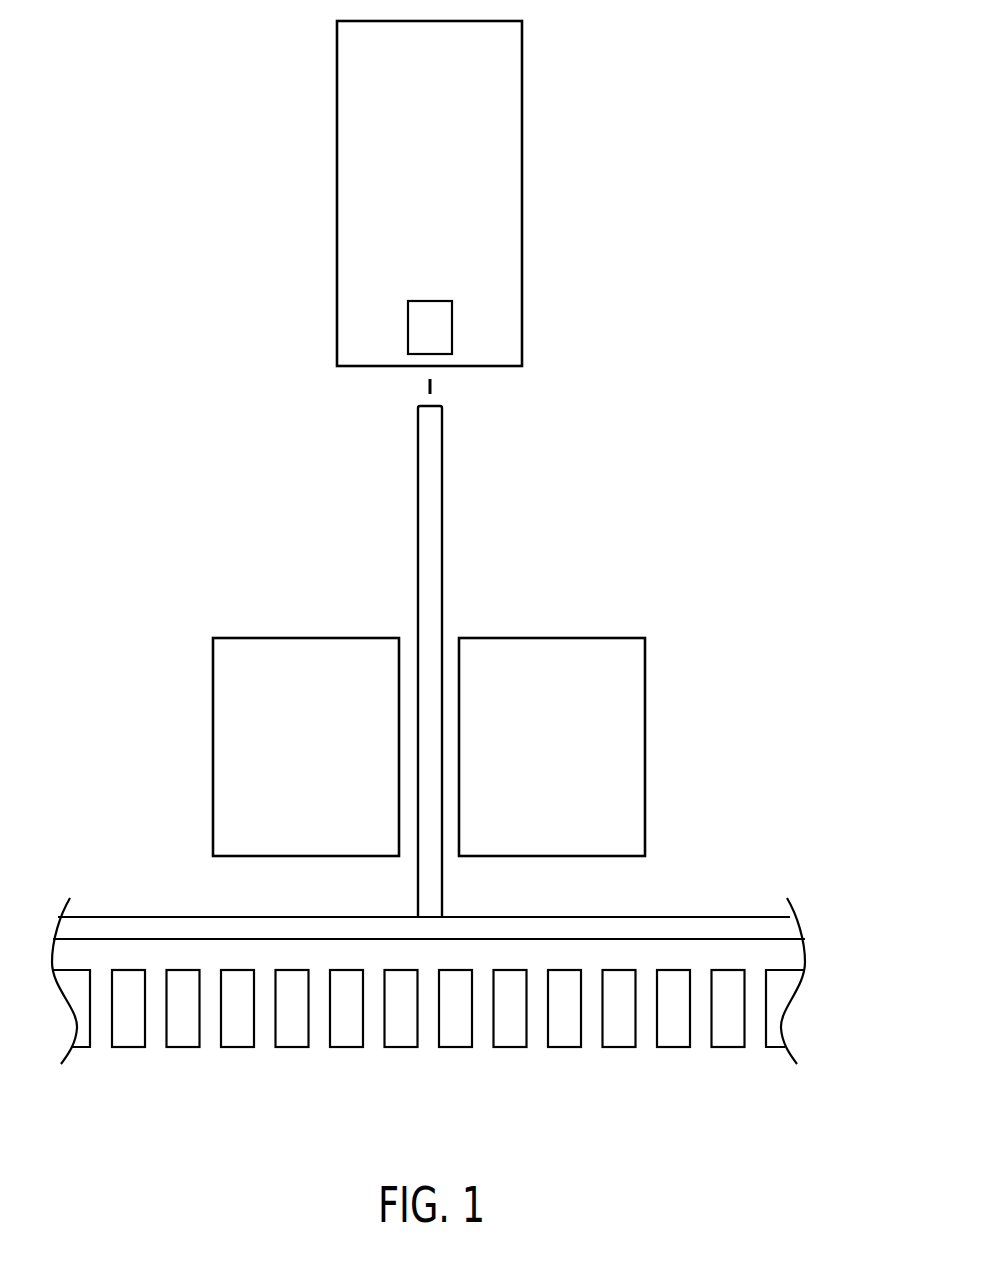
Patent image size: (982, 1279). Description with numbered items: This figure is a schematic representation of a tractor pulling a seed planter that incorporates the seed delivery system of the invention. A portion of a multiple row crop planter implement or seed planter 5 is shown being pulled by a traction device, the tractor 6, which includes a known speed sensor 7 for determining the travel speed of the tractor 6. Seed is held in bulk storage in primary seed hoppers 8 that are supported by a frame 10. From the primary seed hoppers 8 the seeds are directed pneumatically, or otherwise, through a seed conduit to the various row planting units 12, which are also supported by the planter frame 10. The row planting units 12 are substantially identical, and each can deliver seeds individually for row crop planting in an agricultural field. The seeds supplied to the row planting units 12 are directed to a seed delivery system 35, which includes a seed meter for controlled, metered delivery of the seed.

The seed planter 5 is at (428, 586).
The tractor 6 is at (505, 240).
The speed sensor 7 is at (423, 342).
The primary seed hoppers 8 is at (297, 765).
The frame 10 is at (413, 493).
The row planting units 12 is at (292, 1038).
The seed delivery system 35 is at (421, 1047).